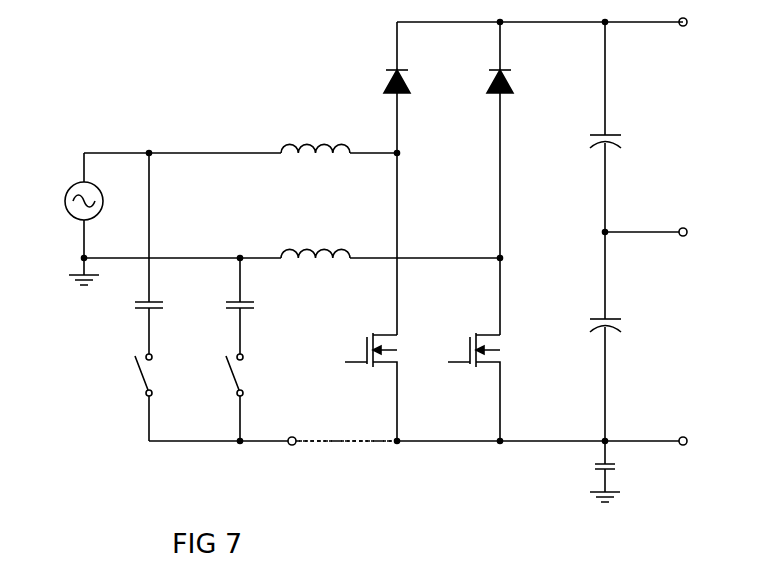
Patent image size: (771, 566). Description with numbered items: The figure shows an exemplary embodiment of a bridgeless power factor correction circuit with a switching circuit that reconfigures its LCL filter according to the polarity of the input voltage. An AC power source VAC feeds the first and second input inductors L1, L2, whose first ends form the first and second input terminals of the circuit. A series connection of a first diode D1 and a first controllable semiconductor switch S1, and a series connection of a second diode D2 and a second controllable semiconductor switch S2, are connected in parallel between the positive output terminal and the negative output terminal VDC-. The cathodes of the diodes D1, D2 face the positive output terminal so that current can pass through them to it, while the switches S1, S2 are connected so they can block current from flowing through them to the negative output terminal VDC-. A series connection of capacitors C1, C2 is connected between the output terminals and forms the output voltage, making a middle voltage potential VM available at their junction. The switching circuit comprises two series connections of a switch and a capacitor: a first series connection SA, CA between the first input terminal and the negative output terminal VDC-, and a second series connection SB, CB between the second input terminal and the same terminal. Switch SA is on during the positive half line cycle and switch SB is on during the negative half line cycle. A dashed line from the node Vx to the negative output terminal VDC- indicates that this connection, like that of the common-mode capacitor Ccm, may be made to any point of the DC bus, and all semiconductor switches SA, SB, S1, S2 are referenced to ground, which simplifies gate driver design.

The AC voltage source VAC is at (65, 219).
The first input inductor L1 is at (240, 136).
The second input inductor L2 is at (292, 241).
The first diode D1 is at (409, 81).
The second diode D2 is at (512, 81).
The first controllable semiconductor switch S1 is at (366, 387).
The second controllable semiconductor switch S2 is at (469, 387).
The capacitor CA is at (134, 327).
The capacitor CB is at (225, 327).
The switch SA is at (131, 397).
The switch SB is at (221, 397).
The capacitor terminal Vx is at (290, 453).
The capacitor C1 is at (588, 144).
The capacitor C2 is at (588, 328).
The middle voltage potential VM is at (664, 233).
The common-mode capacitor Ccm is at (618, 471).
The negative output terminal VDC- is at (716, 442).